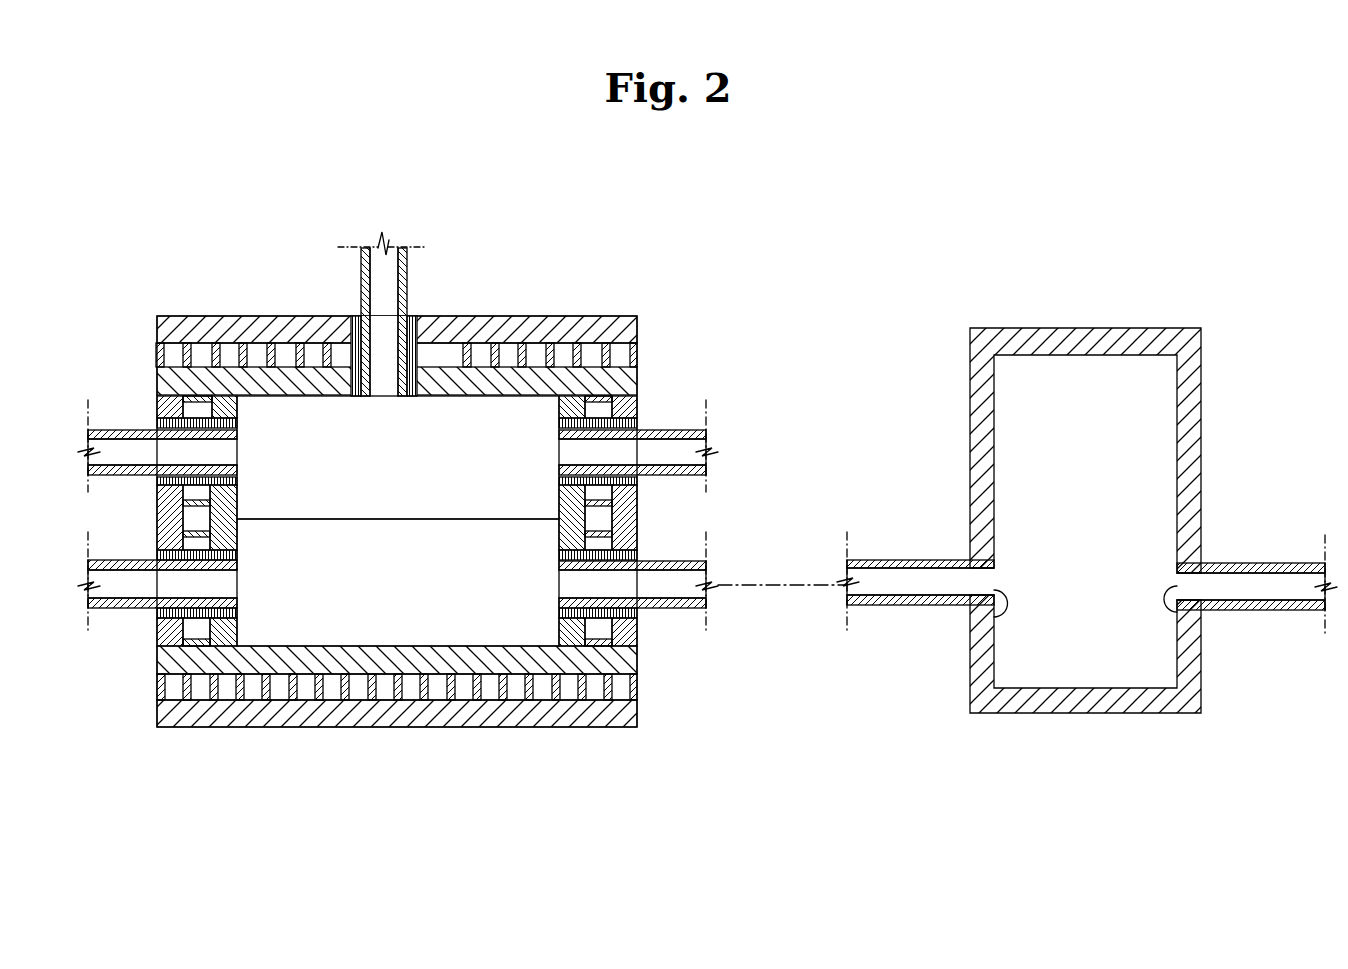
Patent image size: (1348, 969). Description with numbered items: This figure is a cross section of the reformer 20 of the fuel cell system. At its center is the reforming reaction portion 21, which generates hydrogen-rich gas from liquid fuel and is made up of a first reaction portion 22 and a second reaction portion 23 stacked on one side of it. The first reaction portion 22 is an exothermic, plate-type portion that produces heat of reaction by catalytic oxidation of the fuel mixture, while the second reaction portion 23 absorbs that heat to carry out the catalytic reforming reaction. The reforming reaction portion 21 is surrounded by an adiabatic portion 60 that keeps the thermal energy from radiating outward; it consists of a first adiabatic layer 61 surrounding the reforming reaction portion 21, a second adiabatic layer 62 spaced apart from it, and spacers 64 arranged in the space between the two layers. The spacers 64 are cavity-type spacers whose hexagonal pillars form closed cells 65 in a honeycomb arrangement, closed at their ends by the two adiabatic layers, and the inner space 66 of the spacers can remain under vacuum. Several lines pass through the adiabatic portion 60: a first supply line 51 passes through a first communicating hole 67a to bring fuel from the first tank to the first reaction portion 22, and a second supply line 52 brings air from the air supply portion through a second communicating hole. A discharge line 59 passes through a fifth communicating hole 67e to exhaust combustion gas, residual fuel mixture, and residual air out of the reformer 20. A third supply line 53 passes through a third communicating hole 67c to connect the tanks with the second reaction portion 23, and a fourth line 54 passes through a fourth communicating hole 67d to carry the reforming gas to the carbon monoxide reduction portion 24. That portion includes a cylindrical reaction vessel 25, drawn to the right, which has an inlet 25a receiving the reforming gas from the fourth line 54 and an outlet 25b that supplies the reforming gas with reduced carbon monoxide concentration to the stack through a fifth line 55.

The reformer 20 is at (942, 247).
The reforming reaction portion 21 is at (418, 793).
The first reaction portion 22 is at (407, 505).
The second reaction portion 23 is at (352, 622).
The carbon monoxide reduction portion 24 is at (1225, 358).
The reaction vessel 25 is at (1196, 433).
The inlet 25a is at (996, 613).
The outlet 25b is at (1173, 615).
The first supply line 51 is at (118, 430).
The second supply line 52 is at (407, 265).
The third supply line 53 is at (134, 610).
The fourth line 54 is at (669, 610).
The fifth line 55 is at (1257, 563).
The discharge line 59 is at (671, 430).
The adiabatic portion 60 is at (211, 740).
The first adiabatic layer 61 is at (233, 375).
The second adiabatic layer 62 is at (163, 316).
The spacer 64 is at (648, 353).
The closed cell 65 is at (508, 350).
The inner space 66 is at (264, 350).
The first communicating hole 67a is at (182, 400).
The third communicating hole 67c is at (188, 538).
The fourth communicating hole 67d is at (598, 547).
The fifth communicating hole 67e is at (592, 417).